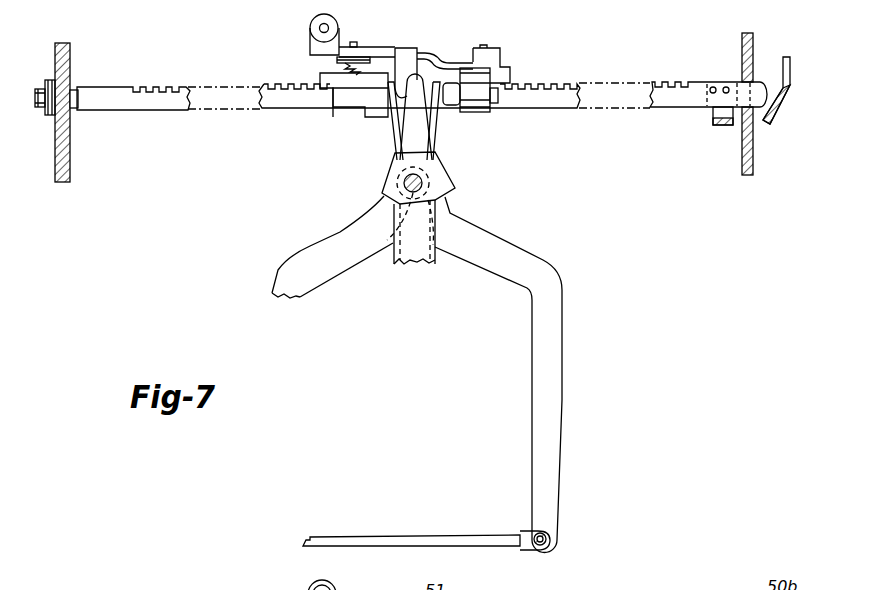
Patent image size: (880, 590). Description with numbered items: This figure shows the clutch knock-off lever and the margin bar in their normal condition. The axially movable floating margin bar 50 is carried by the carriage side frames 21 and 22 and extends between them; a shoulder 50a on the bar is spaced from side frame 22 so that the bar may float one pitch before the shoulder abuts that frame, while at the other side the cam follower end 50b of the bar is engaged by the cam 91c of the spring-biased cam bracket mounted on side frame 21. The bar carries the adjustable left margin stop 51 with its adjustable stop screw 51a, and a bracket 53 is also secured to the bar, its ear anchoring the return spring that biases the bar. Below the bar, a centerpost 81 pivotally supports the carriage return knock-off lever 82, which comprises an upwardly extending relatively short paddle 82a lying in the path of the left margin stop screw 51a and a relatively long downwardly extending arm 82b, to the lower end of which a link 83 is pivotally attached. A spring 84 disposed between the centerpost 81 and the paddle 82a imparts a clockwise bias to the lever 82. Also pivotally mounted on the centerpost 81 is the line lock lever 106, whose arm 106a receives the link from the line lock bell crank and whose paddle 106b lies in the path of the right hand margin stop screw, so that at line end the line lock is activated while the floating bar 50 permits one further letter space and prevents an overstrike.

The side frame 21 is at (745, 163).
The side frame 22 is at (60, 170).
The margin bar 50 is at (553, 78).
The shoulder 50a is at (74, 110).
The cam follower end 50b is at (770, 88).
The left margin stop 51 is at (437, 53).
The stop screw 51a is at (447, 110).
The bracket 53 is at (717, 117).
The centerpost 81 is at (403, 250).
The carriage return knock-off lever 82 is at (507, 255).
The paddle 82a is at (438, 130).
The arm 82b is at (548, 482).
The link 83 is at (422, 540).
The spring 84 is at (438, 53).
The cam 91c is at (775, 115).
The lever 106 is at (378, 177).
The arm 106a is at (293, 268).
The paddle 106b is at (387, 115).